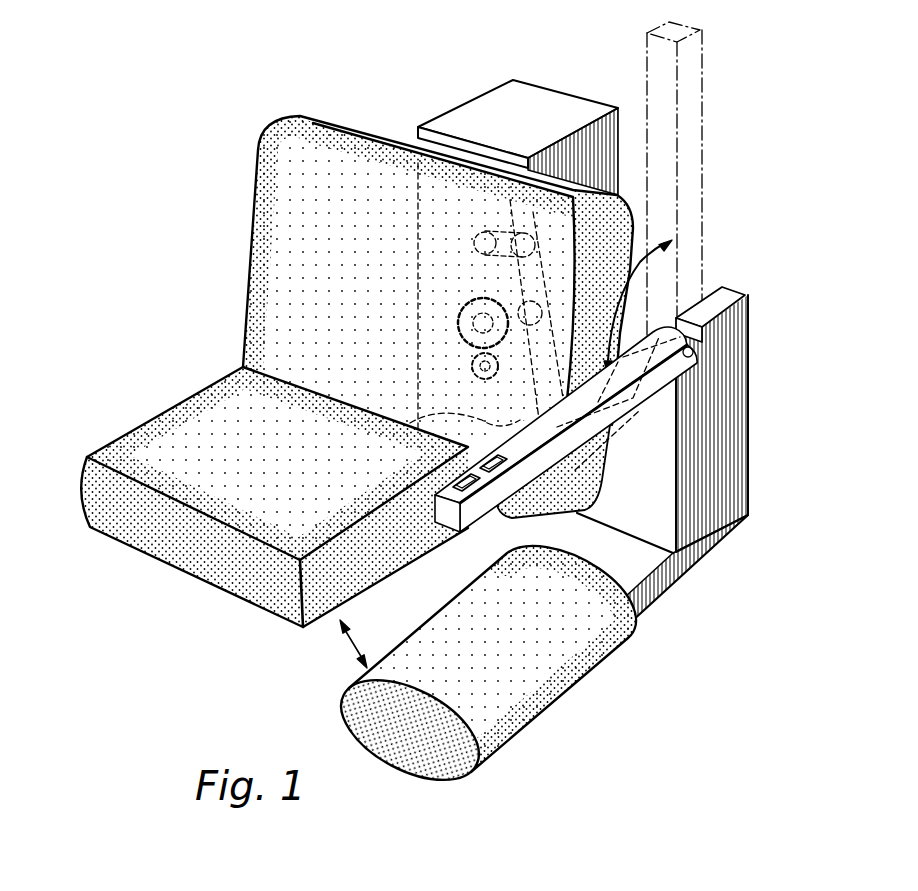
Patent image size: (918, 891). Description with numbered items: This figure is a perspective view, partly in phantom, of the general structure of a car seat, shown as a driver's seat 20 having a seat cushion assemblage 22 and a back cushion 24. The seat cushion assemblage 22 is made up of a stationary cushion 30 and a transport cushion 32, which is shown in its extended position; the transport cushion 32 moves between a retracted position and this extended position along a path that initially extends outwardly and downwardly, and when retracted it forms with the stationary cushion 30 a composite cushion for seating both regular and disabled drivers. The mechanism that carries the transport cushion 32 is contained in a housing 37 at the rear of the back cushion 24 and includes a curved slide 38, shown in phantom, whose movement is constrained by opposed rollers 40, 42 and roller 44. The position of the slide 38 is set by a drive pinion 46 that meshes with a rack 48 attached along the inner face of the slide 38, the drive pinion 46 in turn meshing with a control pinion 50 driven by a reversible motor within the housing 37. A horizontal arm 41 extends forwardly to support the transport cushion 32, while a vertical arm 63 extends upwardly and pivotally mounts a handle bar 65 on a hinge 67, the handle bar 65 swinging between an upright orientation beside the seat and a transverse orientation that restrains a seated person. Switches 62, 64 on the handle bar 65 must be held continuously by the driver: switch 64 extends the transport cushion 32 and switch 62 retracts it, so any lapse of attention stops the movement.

The driver's seat 20 is at (365, 353).
The seat cushion assemblage 22 is at (330, 714).
The back cushion 24 is at (256, 229).
The stationary cushion 30 is at (120, 540).
The transport cushion 32 is at (550, 698).
The housing 37 is at (468, 103).
The curved slide 38 is at (566, 429).
The roller 40 is at (474, 250).
The horizontal arm 41 is at (658, 587).
The roller 42 is at (497, 212).
The roller 44 is at (532, 300).
The drive pinion 46 is at (456, 324).
The rack 48 is at (465, 414).
The control pinion 50 is at (478, 380).
The switch 62 is at (456, 490).
The vertical arm 63 is at (718, 525).
The switch 64 is at (498, 505).
The handle bar 65 is at (628, 402).
The hinge 67 is at (720, 297).